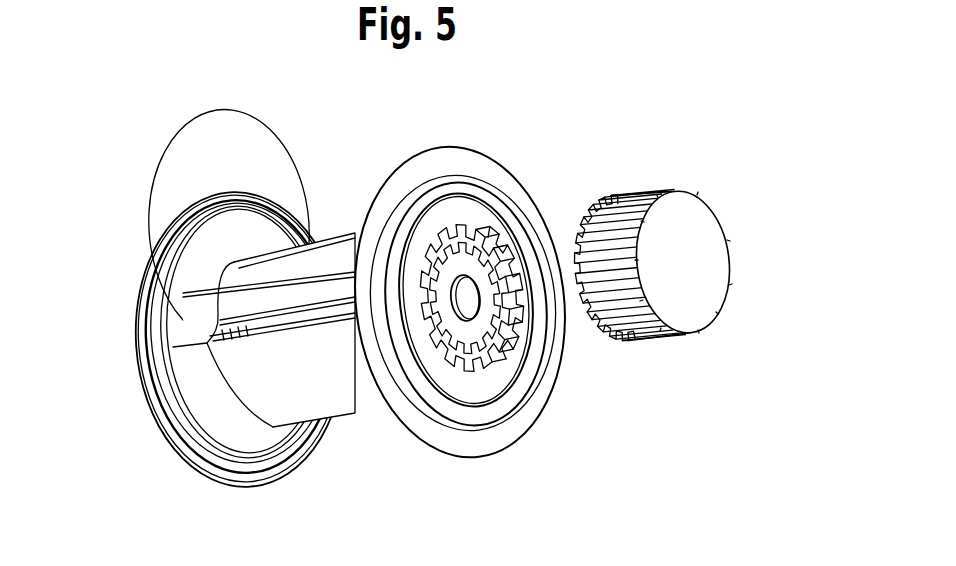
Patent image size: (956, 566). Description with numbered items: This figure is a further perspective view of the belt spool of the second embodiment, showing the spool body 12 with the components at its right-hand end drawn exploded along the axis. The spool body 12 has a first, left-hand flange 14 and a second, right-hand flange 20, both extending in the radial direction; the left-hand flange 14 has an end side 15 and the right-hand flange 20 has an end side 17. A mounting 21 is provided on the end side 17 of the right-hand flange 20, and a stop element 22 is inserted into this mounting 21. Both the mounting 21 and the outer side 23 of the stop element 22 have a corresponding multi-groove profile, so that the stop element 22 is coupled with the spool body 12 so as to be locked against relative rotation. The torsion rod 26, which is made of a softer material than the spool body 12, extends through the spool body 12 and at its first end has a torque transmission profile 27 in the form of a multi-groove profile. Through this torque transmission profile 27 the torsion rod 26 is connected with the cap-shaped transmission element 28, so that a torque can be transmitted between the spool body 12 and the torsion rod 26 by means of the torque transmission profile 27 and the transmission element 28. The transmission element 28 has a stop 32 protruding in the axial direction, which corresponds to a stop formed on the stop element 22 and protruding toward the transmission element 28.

The spool body 12 is at (324, 239).
The left-hand flange 14 is at (163, 240).
The end side 15 is at (136, 337).
The end side 17 is at (463, 200).
The right-hand flange 20 is at (437, 160).
The mounting 21 is at (487, 370).
The stop element 22 is at (690, 310).
The outer side 23 is at (620, 210).
The torsion rod 26 is at (253, 345).
The torque transmission profile 27 is at (513, 327).
The transmission element 28 is at (510, 357).
The stop 32 is at (524, 288).